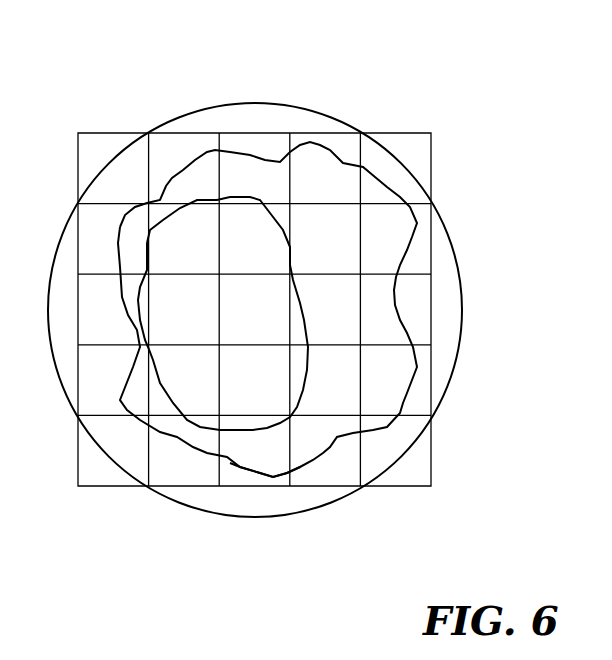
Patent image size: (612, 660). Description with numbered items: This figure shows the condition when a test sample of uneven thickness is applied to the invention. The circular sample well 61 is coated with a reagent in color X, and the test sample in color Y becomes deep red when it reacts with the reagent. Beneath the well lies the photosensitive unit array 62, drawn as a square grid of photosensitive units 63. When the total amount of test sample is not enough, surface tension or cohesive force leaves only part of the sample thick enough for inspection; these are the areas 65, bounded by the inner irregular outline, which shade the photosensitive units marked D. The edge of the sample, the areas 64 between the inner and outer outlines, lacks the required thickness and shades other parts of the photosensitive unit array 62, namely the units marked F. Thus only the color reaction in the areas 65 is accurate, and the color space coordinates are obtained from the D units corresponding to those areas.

The sample well 61 is at (257, 102).
The photosensitive unit array 62 is at (395, 133).
The photosensitive units 63 is at (432, 306).
The areas 64 is at (277, 478).
The areas 65 is at (192, 415).